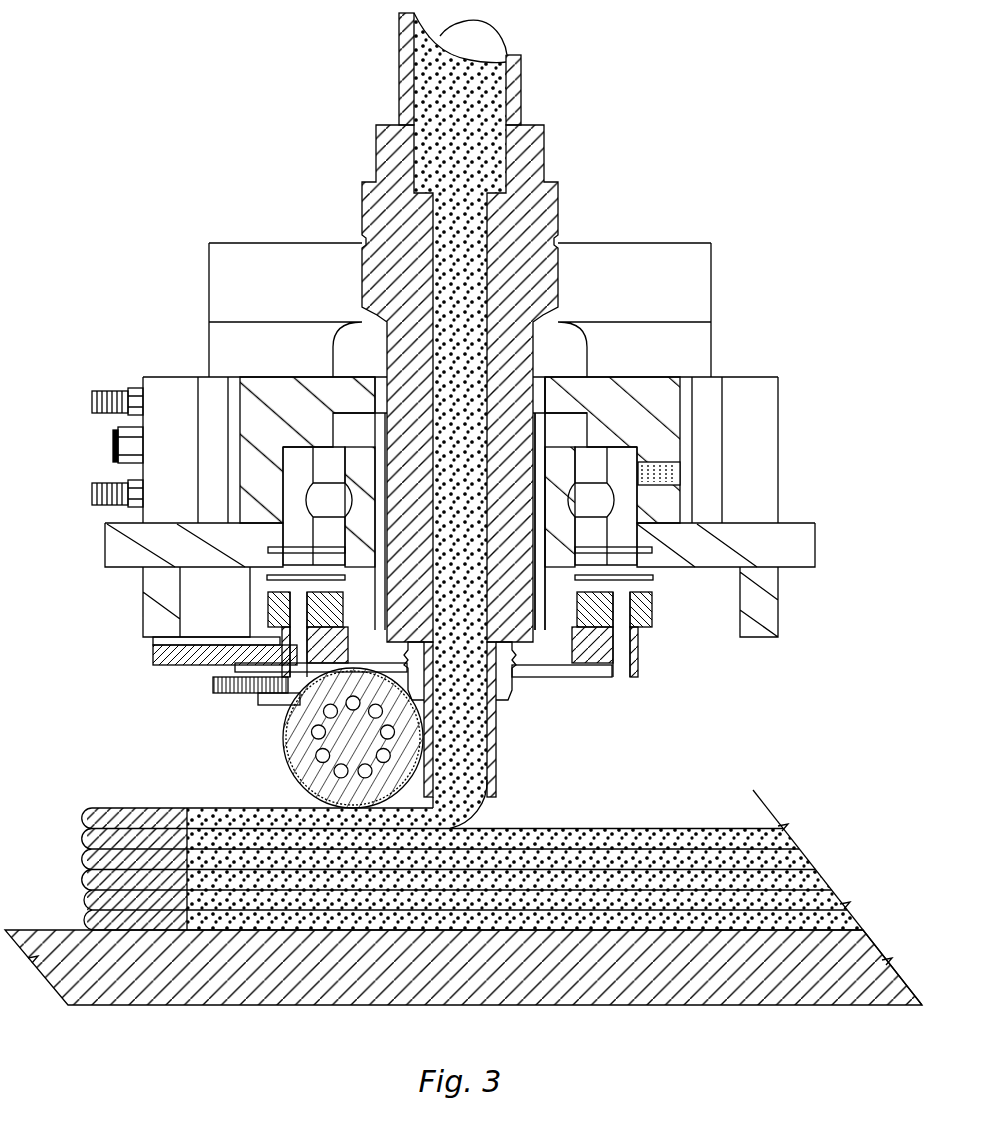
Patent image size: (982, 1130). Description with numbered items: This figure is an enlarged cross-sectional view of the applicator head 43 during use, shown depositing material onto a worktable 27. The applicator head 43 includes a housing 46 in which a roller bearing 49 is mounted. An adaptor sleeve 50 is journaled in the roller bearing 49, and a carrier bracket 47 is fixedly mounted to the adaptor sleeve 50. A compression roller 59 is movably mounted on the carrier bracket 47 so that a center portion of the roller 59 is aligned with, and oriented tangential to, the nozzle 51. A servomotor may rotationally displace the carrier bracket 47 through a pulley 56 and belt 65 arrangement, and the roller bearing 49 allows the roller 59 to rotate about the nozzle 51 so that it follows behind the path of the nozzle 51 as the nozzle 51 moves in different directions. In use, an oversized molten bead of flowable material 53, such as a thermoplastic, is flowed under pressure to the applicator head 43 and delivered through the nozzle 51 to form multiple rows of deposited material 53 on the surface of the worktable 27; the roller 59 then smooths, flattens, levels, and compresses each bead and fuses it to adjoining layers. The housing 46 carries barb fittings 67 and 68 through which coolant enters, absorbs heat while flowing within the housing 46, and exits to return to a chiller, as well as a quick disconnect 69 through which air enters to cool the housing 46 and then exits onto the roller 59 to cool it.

The worktable 27 is at (607, 1005).
The applicator head 43 is at (464, 420).
The housing 46 is at (184, 376).
The carrier bracket 47 is at (153, 664).
The roller bearing 49 is at (623, 458).
The adaptor sleeve 50 is at (548, 533).
The nozzle 51 is at (376, 148).
The flowable material 53 is at (470, 12).
The pulley 56 is at (640, 627).
The compression roller 59 is at (283, 742).
The belt 65 is at (655, 607).
The barb fitting 67 is at (92, 402).
The barb fitting 68 is at (92, 496).
The quick disconnect 69 is at (113, 445).